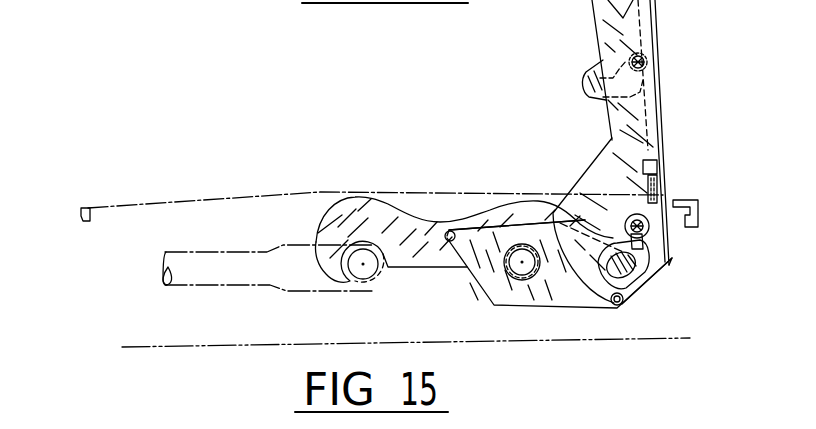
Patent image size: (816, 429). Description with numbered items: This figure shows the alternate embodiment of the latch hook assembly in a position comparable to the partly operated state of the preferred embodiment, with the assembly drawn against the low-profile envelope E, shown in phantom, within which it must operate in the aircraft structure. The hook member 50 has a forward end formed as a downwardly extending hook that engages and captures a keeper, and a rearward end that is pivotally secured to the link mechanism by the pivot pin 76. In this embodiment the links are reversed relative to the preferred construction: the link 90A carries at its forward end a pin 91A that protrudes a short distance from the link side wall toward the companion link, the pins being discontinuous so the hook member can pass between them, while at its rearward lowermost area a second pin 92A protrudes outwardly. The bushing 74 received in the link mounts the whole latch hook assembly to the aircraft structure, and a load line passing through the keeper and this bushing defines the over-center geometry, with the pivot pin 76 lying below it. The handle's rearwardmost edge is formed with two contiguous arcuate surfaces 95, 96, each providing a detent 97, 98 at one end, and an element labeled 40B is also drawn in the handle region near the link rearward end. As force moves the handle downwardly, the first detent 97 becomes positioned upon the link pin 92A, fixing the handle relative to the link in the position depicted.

The hook member 50 is at (351, 212).
The link 90A is at (536, 315).
The pin 91A is at (450, 231).
The bushing 74 is at (518, 250).
The detent 98 is at (552, 254).
The seat back frame post 40B is at (668, 263).
The arcuate surface 96 is at (558, 196).
The pivot pin 76 is at (613, 248).
The arcuate surface 95 is at (637, 282).
The pin 92A is at (632, 305).
The detent 97 is at (617, 305).
The envelope E is at (140, 346).